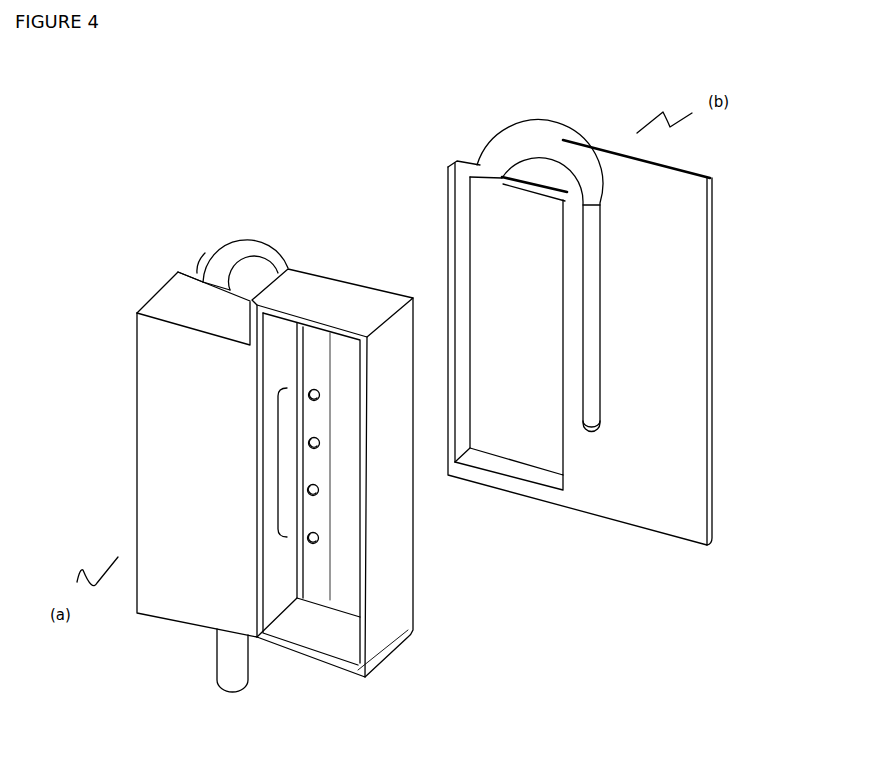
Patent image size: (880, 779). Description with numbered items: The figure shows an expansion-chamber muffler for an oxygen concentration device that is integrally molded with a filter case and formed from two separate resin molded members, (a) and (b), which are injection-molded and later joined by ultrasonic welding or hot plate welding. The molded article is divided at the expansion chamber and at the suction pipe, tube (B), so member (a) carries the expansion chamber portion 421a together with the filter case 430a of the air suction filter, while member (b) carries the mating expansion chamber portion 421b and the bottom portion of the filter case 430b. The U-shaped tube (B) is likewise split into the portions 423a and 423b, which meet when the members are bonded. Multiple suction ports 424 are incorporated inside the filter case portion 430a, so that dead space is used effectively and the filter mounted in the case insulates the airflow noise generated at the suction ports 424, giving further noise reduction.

The expansion chamber portion 421a is at (150, 347).
The expansion chamber portion 421b is at (488, 247).
The tube (B) portion 423a is at (235, 262).
The tube (B) portion 423b is at (477, 163).
The suction ports 424 is at (268, 448).
The filter case 430a is at (293, 562).
The bottom portion of the filter case 430b is at (677, 290).